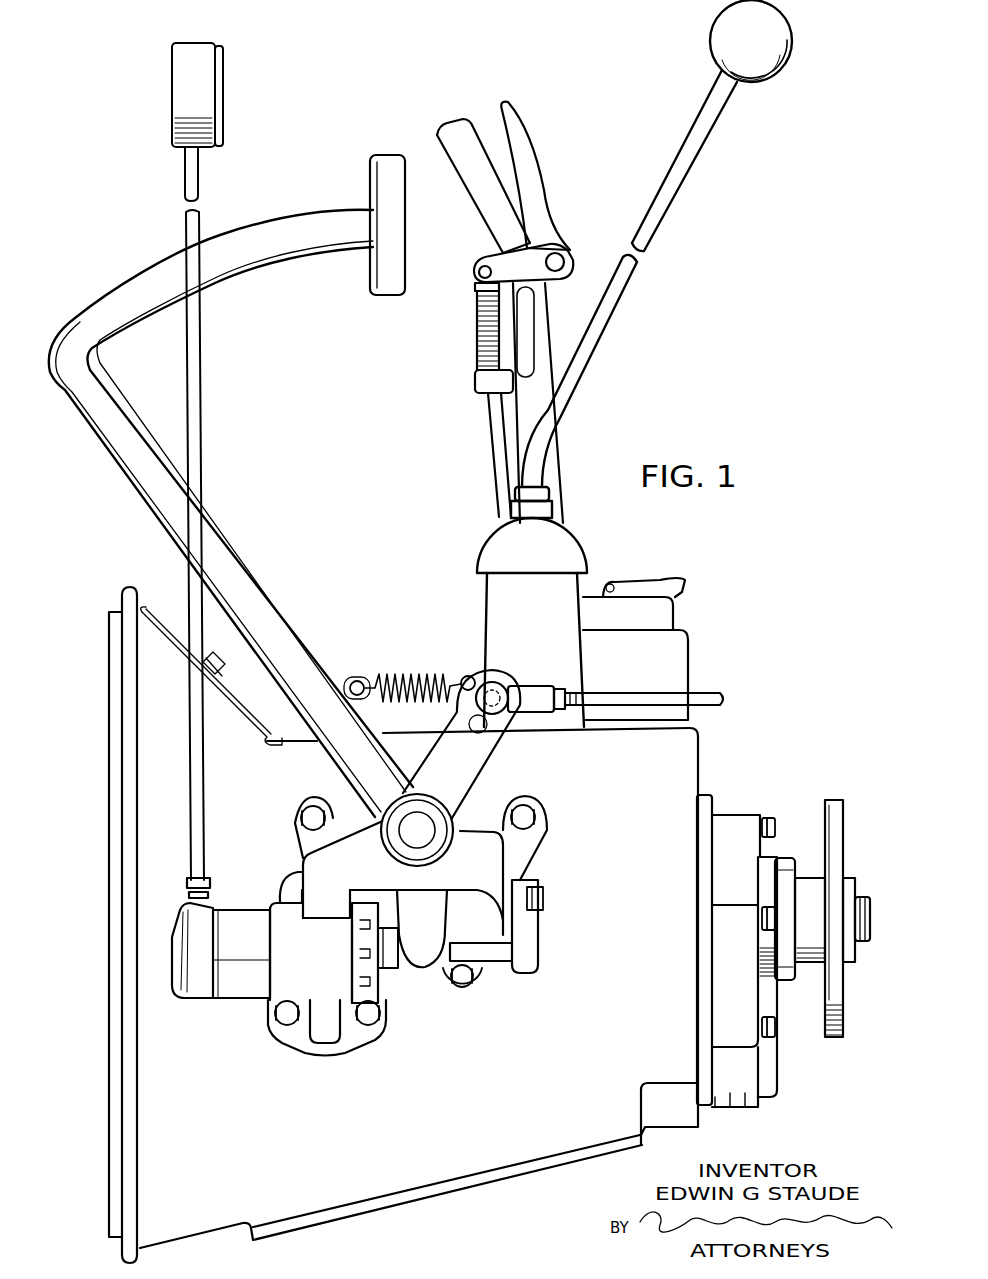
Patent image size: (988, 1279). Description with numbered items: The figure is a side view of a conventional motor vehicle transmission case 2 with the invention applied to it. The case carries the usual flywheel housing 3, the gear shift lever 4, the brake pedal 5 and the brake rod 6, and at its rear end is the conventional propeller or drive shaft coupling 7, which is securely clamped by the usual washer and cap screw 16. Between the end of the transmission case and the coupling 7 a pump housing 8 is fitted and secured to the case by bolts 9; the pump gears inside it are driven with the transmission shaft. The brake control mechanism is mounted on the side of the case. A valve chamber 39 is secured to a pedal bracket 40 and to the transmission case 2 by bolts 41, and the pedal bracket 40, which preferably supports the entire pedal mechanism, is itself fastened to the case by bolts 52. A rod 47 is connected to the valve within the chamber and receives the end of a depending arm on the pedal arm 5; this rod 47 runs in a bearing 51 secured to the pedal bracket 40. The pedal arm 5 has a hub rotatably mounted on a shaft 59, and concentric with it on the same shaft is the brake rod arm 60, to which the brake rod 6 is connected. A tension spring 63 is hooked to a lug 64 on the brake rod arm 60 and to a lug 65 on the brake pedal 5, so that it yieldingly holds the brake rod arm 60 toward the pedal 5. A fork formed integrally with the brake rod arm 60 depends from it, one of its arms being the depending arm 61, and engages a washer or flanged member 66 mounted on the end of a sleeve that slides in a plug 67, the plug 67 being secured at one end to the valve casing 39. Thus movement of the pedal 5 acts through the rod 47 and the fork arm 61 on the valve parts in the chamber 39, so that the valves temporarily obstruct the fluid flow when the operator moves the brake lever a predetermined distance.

The transmission case 2 is at (419, 927).
The flywheel housing 3 is at (128, 1062).
The gear shift lever 4 is at (605, 305).
The brake pedal 5 is at (223, 563).
The brake rod 6 is at (717, 692).
The propeller shaft coupling 7 is at (832, 805).
The pump housing 8 is at (728, 823).
The bolts 9 is at (770, 818).
The cap screw 16 is at (860, 897).
The valve chamber 39 is at (235, 993).
The pedal bracket 40 is at (492, 862).
The bolts 41 is at (285, 1015).
The rod 47 is at (497, 957).
The bearing 51 is at (540, 935).
The bolts 52 is at (310, 813).
The shaft 59 is at (417, 830).
The brake rod arm 60 is at (477, 765).
The depending arm 61 is at (422, 928).
The tension spring 63 is at (397, 672).
The lug 64 is at (463, 675).
The lug 65 is at (355, 680).
The flanged member 66 is at (385, 960).
The plug 67 is at (368, 907).